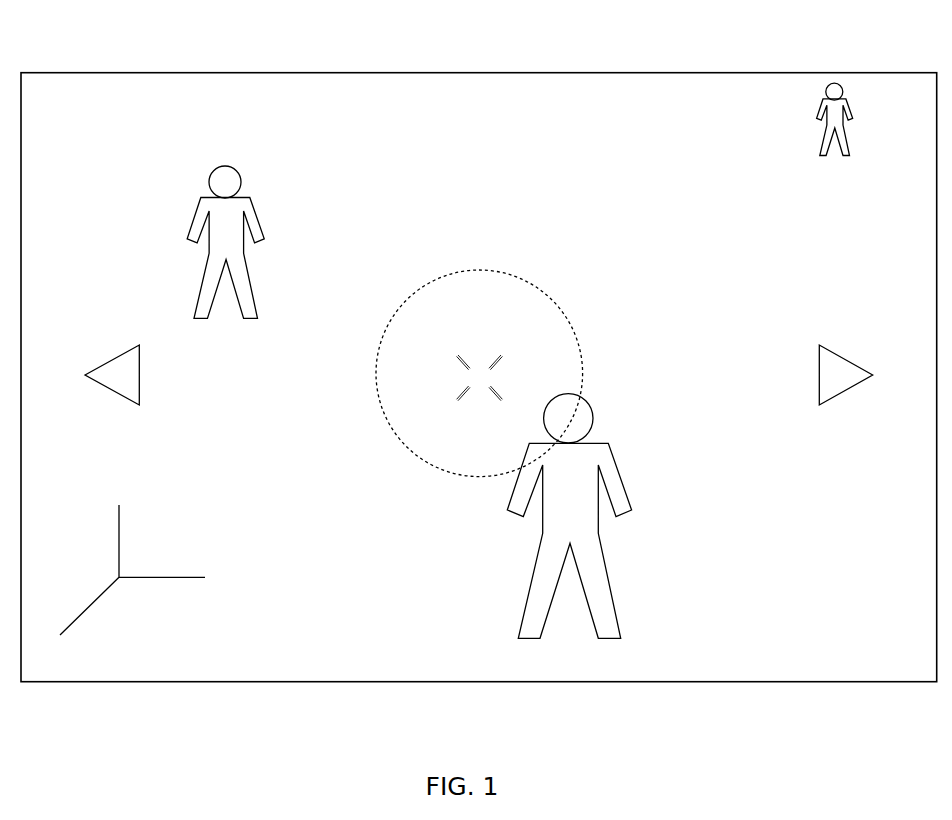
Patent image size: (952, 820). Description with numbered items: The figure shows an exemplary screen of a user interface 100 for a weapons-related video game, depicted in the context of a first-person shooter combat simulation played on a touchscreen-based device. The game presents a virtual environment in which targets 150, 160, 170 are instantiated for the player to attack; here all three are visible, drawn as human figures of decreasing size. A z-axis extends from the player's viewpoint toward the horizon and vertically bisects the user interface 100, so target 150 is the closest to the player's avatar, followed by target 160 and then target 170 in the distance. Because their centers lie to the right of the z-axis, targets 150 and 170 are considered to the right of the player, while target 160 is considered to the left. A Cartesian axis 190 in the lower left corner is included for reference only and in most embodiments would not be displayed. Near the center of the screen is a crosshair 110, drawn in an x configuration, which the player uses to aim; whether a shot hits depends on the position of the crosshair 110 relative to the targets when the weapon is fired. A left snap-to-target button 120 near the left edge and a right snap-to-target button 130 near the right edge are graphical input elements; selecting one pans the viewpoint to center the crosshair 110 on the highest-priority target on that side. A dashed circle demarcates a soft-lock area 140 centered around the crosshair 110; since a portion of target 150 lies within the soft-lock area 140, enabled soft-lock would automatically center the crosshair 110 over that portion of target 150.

The user interface 100 is at (480, 73).
The crosshair 110 is at (480, 387).
The left snap-to-target button 120 is at (115, 388).
The right snap-to-target button 130 is at (845, 388).
The soft-lock area 140 is at (480, 373).
The target 150 is at (569, 530).
The target 160 is at (225, 255).
The target 170 is at (835, 132).
The Cartesian axis 190 is at (122, 585).